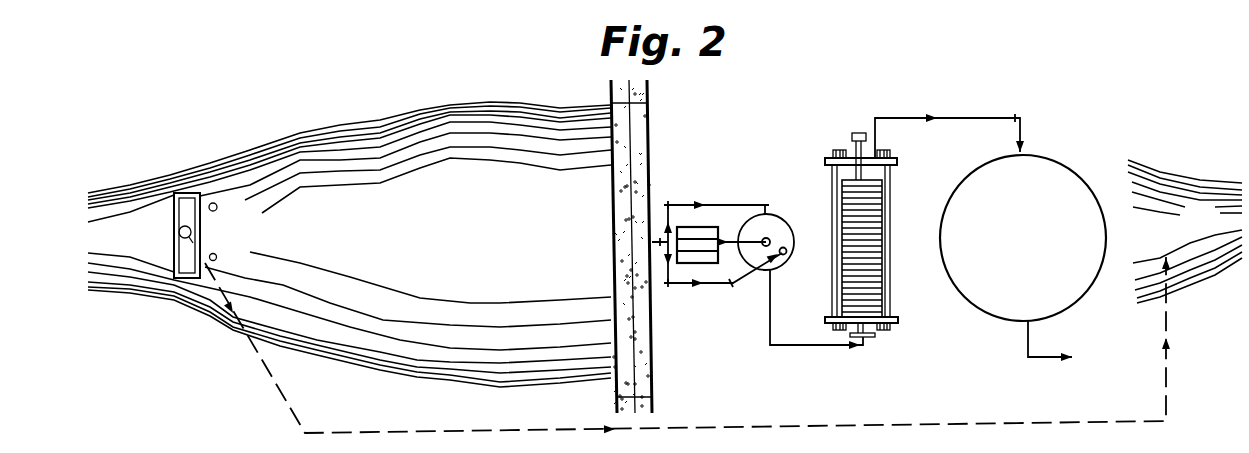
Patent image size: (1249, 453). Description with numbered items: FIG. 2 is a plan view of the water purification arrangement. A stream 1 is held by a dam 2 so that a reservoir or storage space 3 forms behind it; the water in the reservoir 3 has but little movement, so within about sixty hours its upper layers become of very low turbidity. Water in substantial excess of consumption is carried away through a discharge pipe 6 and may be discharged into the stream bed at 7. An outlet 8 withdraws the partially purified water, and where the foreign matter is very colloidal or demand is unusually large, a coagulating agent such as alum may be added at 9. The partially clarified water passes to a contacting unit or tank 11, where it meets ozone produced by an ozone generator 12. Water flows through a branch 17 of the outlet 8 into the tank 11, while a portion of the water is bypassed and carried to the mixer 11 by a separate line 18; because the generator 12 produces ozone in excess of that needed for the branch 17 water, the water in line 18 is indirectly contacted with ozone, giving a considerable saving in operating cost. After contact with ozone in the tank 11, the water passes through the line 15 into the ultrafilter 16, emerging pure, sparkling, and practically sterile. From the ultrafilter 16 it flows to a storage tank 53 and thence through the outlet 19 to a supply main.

The stream 1 is at (159, 235).
The dam 2 is at (650, 347).
The reservoir or storage space 3 is at (349, 244).
The discharge pipe 6 is at (471, 432).
The stream bed discharge 7 is at (1185, 231).
The outlet 8 is at (657, 237).
The coagulating agent addition point 9 is at (217, 208).
The contacting unit or tank 11 is at (778, 233).
The ozone generator 12 is at (722, 219).
The line 15 is at (802, 345).
The ultrafilter 16 is at (872, 280).
The branch of outlet 17 is at (738, 184).
The separate line 18 is at (710, 289).
The outlet 19 is at (1031, 346).
The storage tank 53 is at (1083, 156).